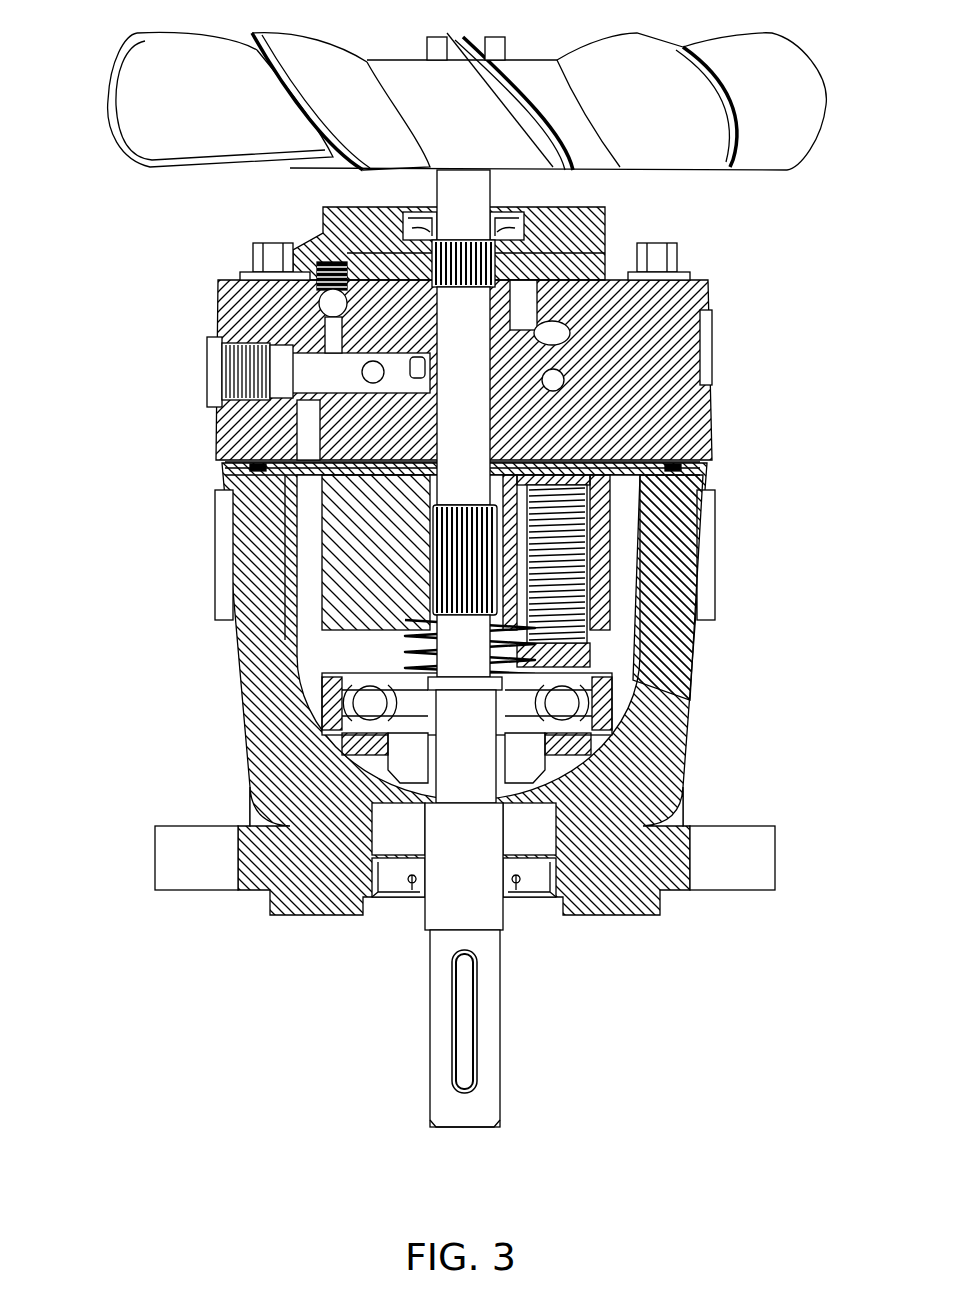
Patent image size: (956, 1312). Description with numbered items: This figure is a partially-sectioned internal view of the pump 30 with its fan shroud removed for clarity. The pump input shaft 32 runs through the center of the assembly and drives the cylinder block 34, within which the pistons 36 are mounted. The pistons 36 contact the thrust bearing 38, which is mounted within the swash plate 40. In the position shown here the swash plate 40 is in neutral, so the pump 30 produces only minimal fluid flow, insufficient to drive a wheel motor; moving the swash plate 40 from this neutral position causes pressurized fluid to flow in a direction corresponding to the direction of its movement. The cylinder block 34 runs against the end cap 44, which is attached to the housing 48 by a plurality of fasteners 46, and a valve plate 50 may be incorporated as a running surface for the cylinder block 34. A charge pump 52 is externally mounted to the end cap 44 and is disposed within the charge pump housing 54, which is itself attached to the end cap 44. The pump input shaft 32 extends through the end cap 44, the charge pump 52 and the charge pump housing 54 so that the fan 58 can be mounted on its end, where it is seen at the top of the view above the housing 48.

The pump 30 is at (106, 280).
The pump input shaft 32 is at (500, 1015).
The cylinder block 34 is at (643, 549).
The pistons 36 is at (630, 661).
The thrust bearing 38 is at (610, 763).
The swash plate 40 is at (627, 691).
The end cap 44 is at (718, 403).
The fasteners 46 is at (685, 257).
The housing 48 is at (252, 716).
The valve plate 50 is at (300, 468).
The charge pump 52 is at (325, 248).
The charge pump housing 54 is at (334, 206).
The fan 58 is at (791, 110).